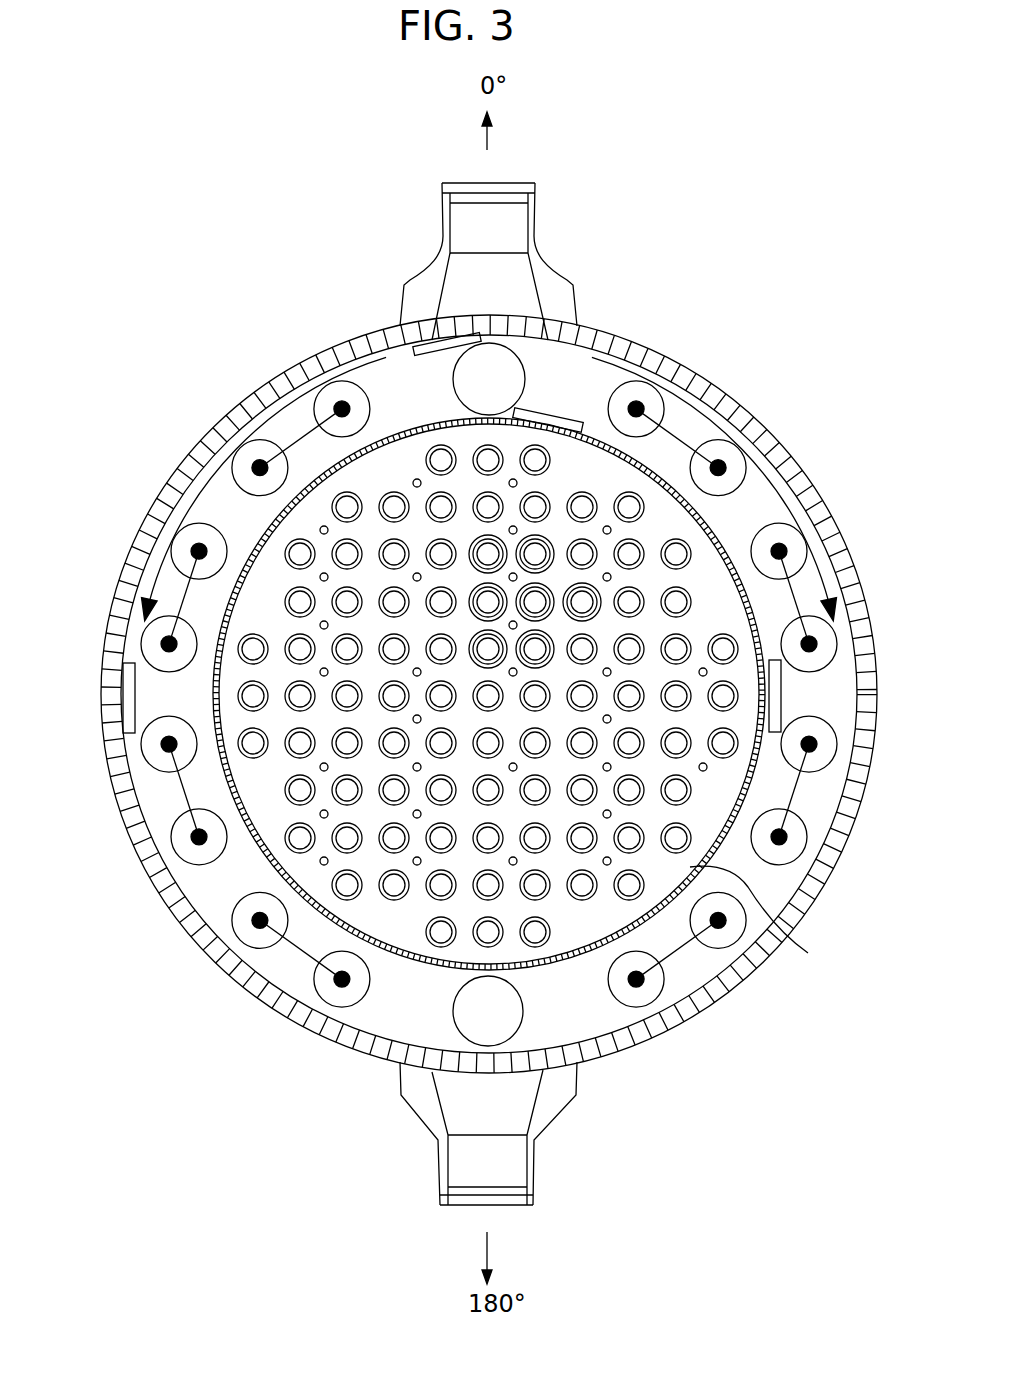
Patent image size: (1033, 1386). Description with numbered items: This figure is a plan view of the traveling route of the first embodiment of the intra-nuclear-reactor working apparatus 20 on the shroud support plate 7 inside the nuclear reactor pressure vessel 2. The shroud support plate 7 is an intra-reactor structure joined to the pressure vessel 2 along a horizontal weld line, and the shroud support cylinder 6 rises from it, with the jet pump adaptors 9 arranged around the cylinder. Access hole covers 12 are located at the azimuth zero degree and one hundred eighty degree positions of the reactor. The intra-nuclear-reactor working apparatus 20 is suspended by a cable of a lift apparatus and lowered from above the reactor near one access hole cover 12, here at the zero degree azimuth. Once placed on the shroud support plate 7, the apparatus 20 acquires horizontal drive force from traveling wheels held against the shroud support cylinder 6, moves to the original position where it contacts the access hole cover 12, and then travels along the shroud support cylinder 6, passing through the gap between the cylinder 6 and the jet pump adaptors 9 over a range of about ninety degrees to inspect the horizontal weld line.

The nuclear reactor pressure vessel 2 is at (836, 525).
The shroud support cylinder 6 is at (523, 697).
The shroud support plate 7 is at (835, 598).
The jet pump adaptor 9 is at (727, 455).
The access hole cover 12 is at (500, 372).
The intra-nuclear-reactor working apparatus 20 is at (448, 350).